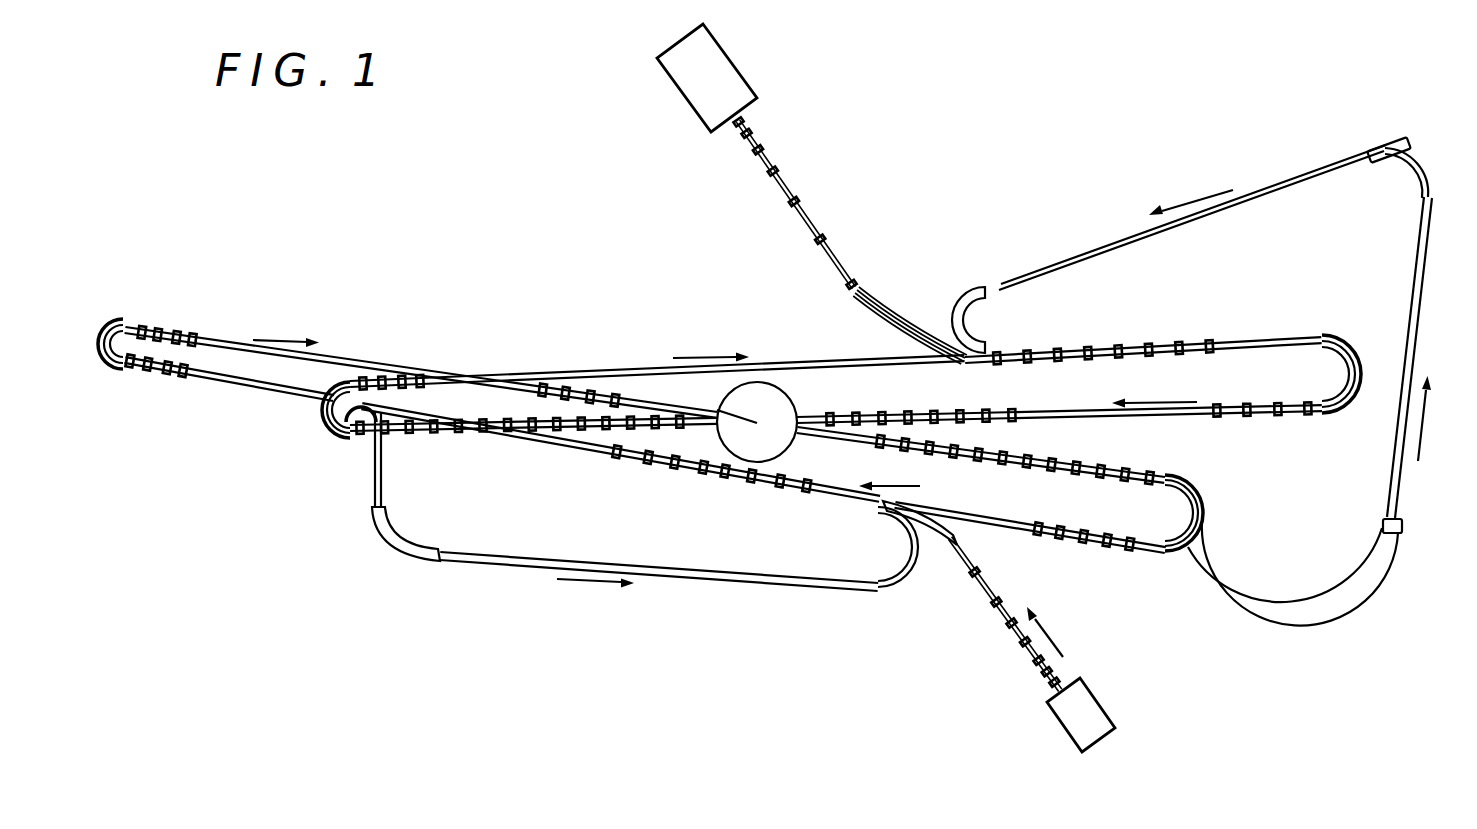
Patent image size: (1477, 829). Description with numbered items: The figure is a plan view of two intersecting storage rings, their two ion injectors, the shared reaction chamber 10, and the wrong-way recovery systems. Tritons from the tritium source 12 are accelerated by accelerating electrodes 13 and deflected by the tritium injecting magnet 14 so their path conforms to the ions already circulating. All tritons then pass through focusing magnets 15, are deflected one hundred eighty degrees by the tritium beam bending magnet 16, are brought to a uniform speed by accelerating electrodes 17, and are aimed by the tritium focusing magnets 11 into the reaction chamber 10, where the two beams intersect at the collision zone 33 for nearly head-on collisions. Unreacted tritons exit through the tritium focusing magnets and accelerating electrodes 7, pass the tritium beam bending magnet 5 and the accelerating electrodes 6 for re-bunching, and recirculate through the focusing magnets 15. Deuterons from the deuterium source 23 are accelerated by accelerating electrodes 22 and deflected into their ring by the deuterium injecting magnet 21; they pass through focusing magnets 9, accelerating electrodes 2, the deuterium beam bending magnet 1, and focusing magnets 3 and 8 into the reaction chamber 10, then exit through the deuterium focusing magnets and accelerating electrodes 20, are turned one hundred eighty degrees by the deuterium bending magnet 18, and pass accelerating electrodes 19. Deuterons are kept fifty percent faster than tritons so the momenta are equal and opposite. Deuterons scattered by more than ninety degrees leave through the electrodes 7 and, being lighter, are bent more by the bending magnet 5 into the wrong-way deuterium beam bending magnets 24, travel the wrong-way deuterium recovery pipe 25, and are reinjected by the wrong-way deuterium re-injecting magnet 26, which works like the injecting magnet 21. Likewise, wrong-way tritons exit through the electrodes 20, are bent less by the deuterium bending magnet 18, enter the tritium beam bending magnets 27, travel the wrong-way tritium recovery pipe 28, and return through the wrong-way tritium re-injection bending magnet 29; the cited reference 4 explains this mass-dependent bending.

The deuterium beam bending magnet 1 is at (100, 330).
The accelerating electrodes 2 is at (153, 390).
The focusing magnets 3 is at (167, 313).
The reference 4 is at (238, 390).
The tritium beam bending magnet 5 is at (347, 413).
The accelerating electrodes 6 is at (656, 364).
The tritium focusing magnets and accelerating electrodes 7 is at (533, 449).
The focusing magnets 8 is at (582, 376).
The focusing magnets 9 is at (621, 464).
The reaction chamber 10 is at (757, 382).
The tritium focusing magnets 11 is at (1059, 398).
The tritium source 12 is at (735, 64).
The accelerating electrodes 13 is at (808, 201).
The tritium injecting magnet 14 is at (897, 320).
The focusing magnets 15 is at (1143, 329).
The tritium beam bending magnet 16 is at (1370, 368).
The accelerating electrodes 17 is at (1214, 433).
The deuterium bending magnet 18 is at (1199, 510).
The accelerating electrodes 19 is at (1030, 548).
The deuterium focusing magnets and accelerating electrodes 20 is at (980, 468).
The deuterium injecting magnet 21 is at (945, 540).
The accelerating electrodes 22 is at (1005, 615).
The deuterium source 23 is at (1070, 726).
The wrong-way deuterium beam bending magnets 24 is at (383, 543).
The wrong-way deuterium recovery pipe 25 is at (447, 553).
The wrong-way deuterium re-injecting magnet 26 is at (867, 590).
The tritium beam bending magnets 27 is at (1407, 147).
The wrong-way tritium recovery pipe 28 is at (1422, 250).
The wrong-way tritium re-injection bending magnet 29 is at (960, 300).
The collision zone 33 is at (717, 410).